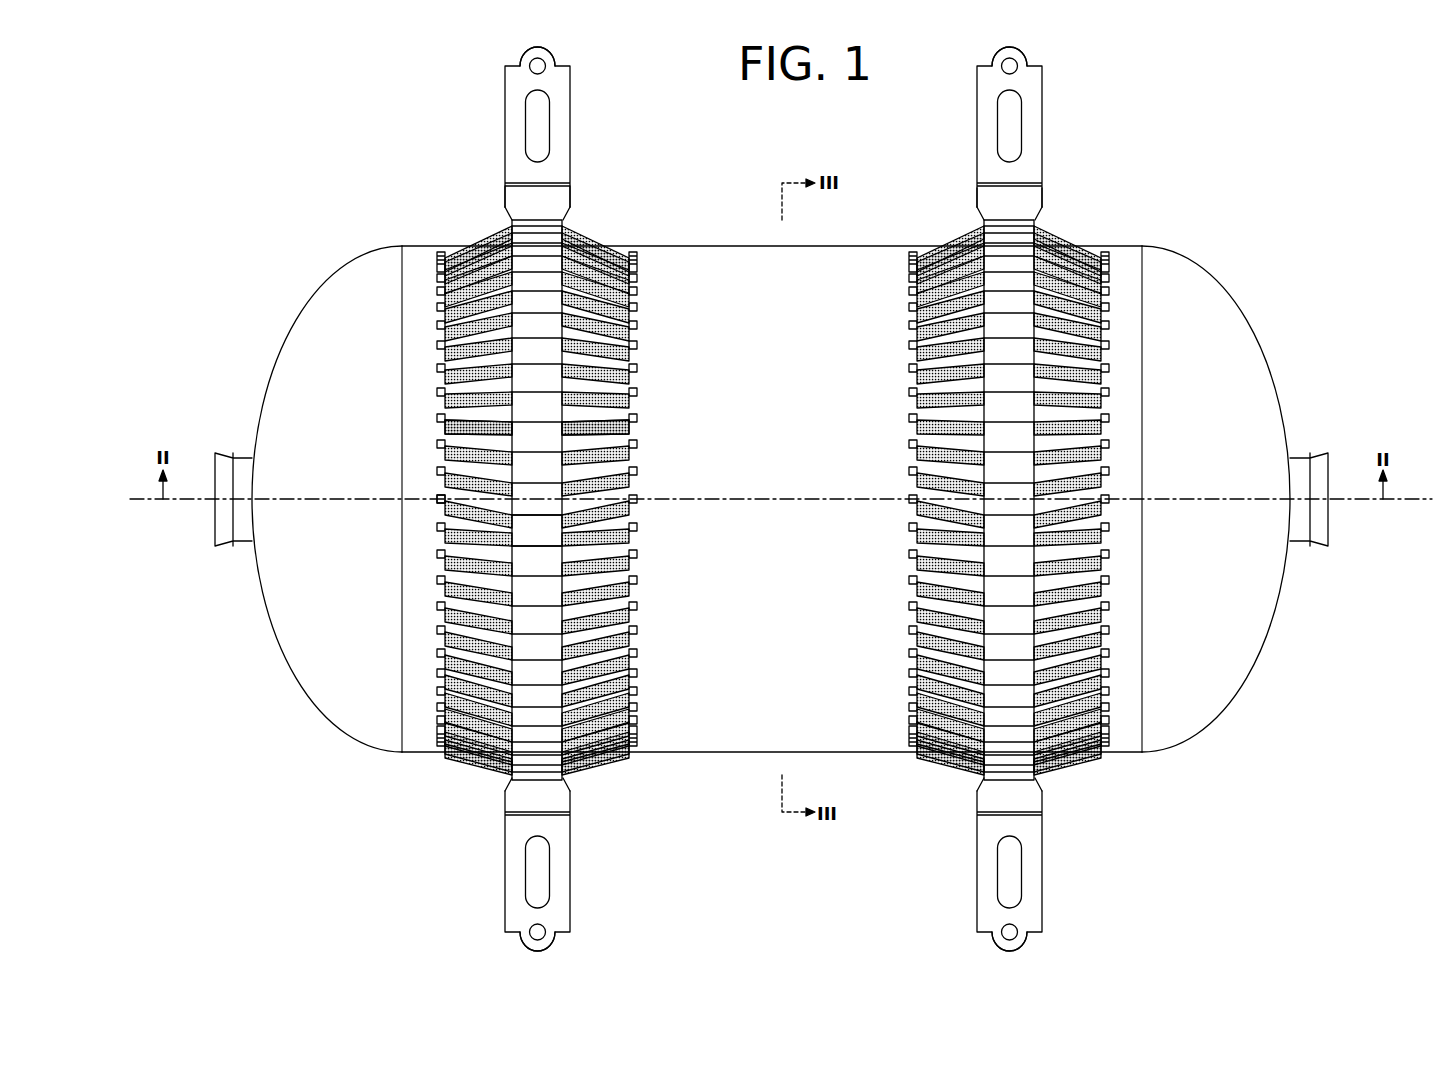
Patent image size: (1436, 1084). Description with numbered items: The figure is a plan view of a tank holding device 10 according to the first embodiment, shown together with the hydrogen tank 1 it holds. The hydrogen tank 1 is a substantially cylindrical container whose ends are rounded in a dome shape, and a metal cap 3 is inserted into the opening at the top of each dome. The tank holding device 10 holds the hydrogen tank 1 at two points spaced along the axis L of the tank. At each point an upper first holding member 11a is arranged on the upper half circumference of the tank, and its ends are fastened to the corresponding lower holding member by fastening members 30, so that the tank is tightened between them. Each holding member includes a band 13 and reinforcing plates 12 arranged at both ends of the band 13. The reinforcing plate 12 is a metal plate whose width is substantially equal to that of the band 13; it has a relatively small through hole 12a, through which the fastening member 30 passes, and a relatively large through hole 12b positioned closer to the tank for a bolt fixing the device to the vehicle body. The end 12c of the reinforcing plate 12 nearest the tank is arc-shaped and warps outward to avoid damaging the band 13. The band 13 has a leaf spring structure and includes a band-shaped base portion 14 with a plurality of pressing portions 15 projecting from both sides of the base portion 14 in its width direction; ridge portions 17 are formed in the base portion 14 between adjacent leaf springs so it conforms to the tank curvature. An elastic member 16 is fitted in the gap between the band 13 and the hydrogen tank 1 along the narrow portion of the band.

The hydrogen tank 1 is at (1264, 340).
The cap 3 is at (216, 530).
The tank holding device 10 is at (771, 499).
The first holding member 11a is at (580, 168).
The reinforcing plate 12 is at (787, 499).
The through hole 12a is at (529, 71).
The through hole 12b is at (537, 108).
The end of the reinforcing plate 12c is at (520, 204).
The band 13 is at (771, 500).
The base portion 14 is at (547, 470).
The pressing portion 15 is at (483, 442).
The elastic member 16 is at (440, 508).
The ridge portion 17 is at (541, 518).
The fastening member 30 is at (542, 73).
The axis L is at (1404, 507).